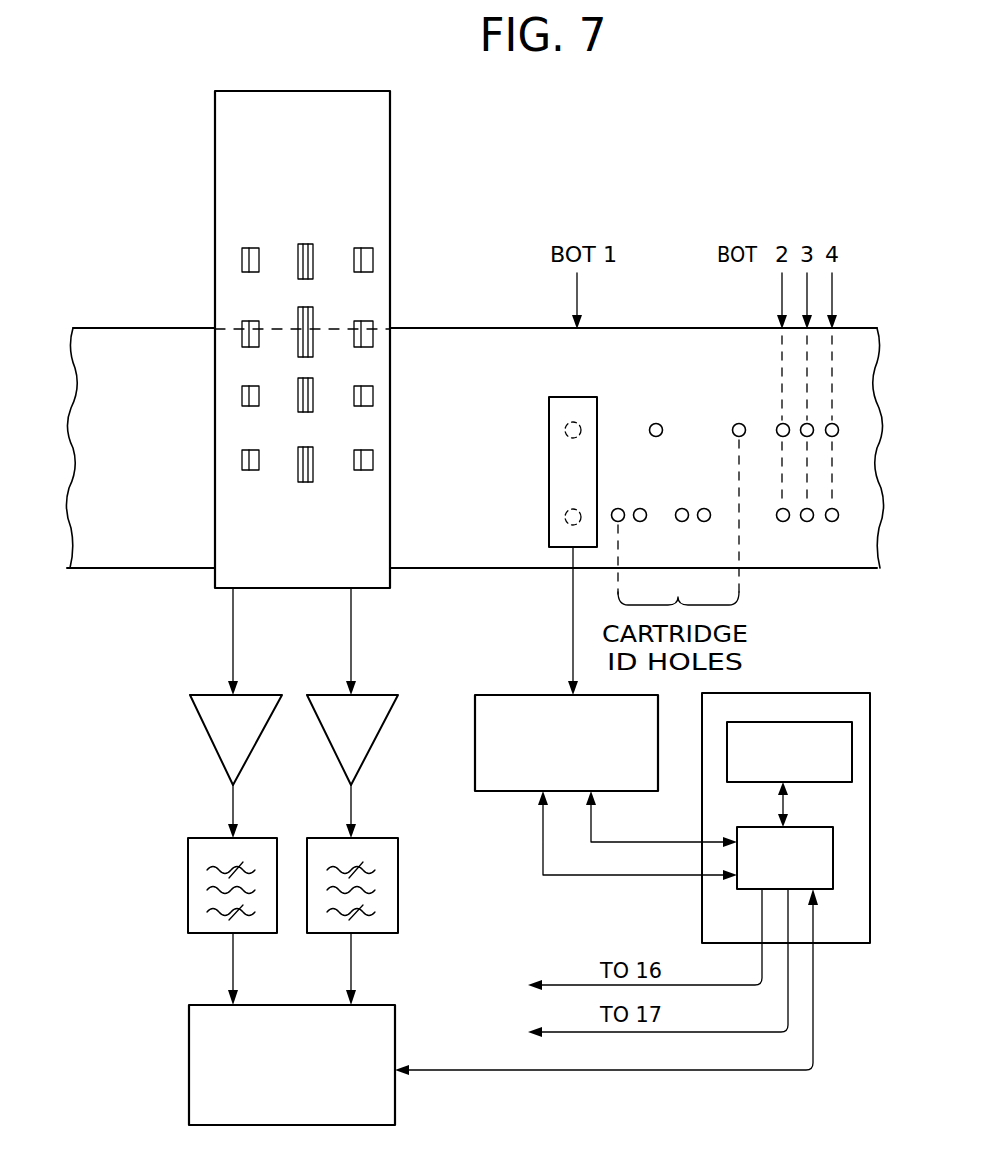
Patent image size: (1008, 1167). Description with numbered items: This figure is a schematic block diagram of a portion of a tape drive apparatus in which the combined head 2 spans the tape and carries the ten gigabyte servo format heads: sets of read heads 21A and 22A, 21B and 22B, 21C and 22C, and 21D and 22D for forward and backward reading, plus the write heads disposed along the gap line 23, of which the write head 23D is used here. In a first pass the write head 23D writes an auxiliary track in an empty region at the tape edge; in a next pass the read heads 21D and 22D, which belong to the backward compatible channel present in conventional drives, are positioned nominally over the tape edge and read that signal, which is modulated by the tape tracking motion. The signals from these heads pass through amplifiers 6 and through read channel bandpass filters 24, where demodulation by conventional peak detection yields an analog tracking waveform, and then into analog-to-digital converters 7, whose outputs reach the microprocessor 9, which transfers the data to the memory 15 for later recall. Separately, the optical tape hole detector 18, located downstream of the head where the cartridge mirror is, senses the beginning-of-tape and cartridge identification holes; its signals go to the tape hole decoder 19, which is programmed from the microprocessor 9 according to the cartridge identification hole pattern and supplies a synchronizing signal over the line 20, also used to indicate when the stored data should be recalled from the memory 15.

The combined head 2 is at (376, 180).
The read head 22A is at (246, 248).
The read head 21A is at (356, 248).
The read head 22D is at (245, 322).
The write head 23D is at (298, 311).
The read head 21D is at (369, 320).
The read head 22B is at (245, 386).
The read head 21B is at (369, 386).
The read head 22C is at (245, 450).
The read head 21C is at (369, 450).
The gap line 23 is at (302, 484).
The tape hole detector 18 is at (595, 401).
The amplifier 6 is at (214, 746).
The read channel bandpass filter 24 is at (188, 896).
The analog-to-digital converter 7 is at (189, 1057).
The tape hole decoder 19 is at (475, 750).
The memory 15 is at (813, 773).
The microprocessor 9 is at (818, 875).
The line 20 is at (607, 877).